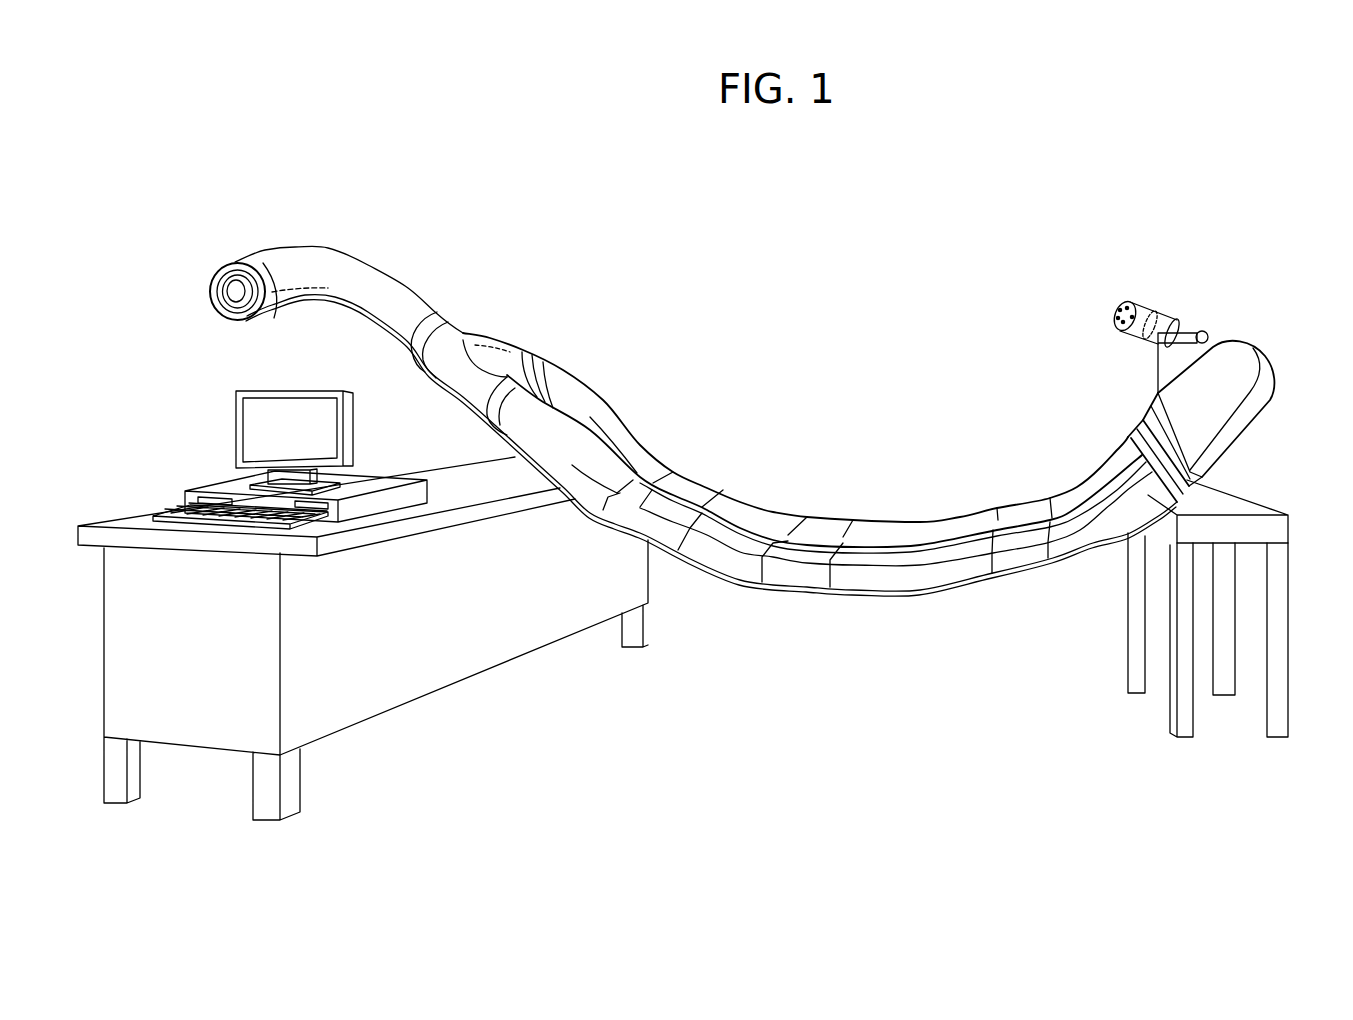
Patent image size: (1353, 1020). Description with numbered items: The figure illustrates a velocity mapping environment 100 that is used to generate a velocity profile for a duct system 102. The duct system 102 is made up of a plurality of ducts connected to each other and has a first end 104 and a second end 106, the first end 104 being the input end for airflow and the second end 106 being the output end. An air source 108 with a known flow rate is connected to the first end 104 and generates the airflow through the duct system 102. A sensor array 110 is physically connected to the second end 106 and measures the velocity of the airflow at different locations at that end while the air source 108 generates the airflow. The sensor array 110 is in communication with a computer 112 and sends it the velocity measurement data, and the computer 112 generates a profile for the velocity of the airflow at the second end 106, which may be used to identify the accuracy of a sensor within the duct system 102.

The velocity mapping environment 100 is at (966, 171).
The duct system 102 is at (1274, 367).
The first end 104 is at (1223, 340).
The second end 106 is at (243, 262).
The air source 108 is at (1167, 317).
The sensor array 110 is at (236, 322).
The computer 112 is at (218, 489).